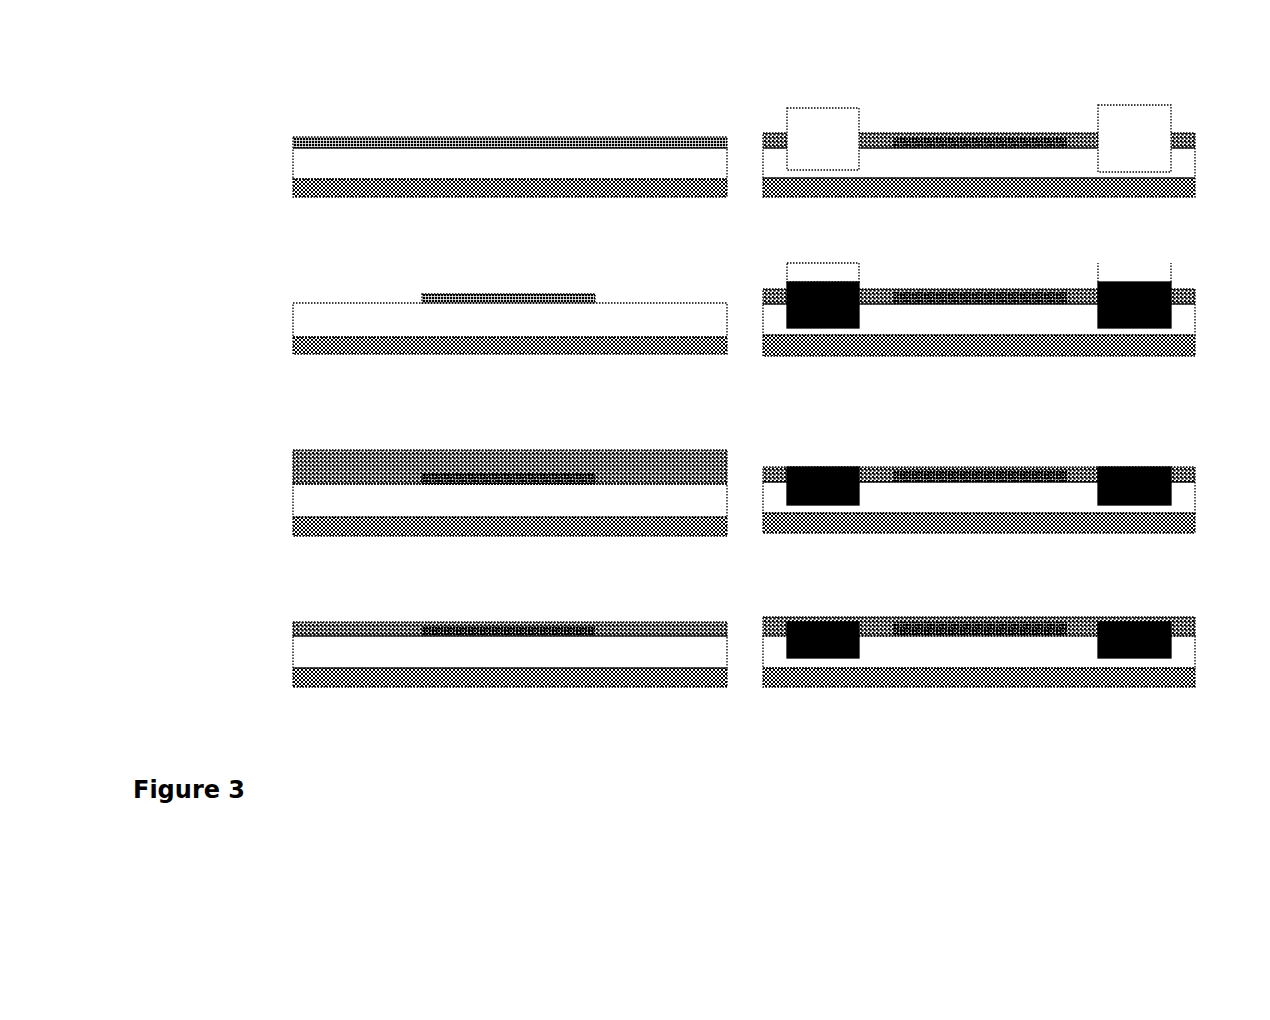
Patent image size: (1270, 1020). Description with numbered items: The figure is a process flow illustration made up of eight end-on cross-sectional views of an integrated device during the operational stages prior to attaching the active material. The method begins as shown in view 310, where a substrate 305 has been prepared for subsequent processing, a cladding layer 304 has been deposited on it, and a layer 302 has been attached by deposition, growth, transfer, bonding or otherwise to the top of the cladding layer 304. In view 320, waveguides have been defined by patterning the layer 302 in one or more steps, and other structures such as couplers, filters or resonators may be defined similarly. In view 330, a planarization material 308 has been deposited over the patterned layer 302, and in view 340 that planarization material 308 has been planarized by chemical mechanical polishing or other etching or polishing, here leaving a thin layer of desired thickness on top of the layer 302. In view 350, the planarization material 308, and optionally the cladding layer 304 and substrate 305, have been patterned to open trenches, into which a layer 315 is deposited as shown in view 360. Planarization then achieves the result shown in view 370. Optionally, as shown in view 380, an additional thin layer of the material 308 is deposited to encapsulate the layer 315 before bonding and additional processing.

The view 310 is at (310, 108).
The view 320 is at (310, 278).
The view 330 is at (310, 425).
The view 340 is at (310, 596).
The view 350 is at (1172, 101).
The view 360 is at (1172, 262).
The view 370 is at (1172, 446).
The view 380 is at (1172, 597).
The layer 302 is at (458, 138).
The cladding layer 304 is at (510, 153).
The substrate 305 is at (585, 181).
The planarization material 308 is at (462, 450).
The layer 315 is at (859, 282).